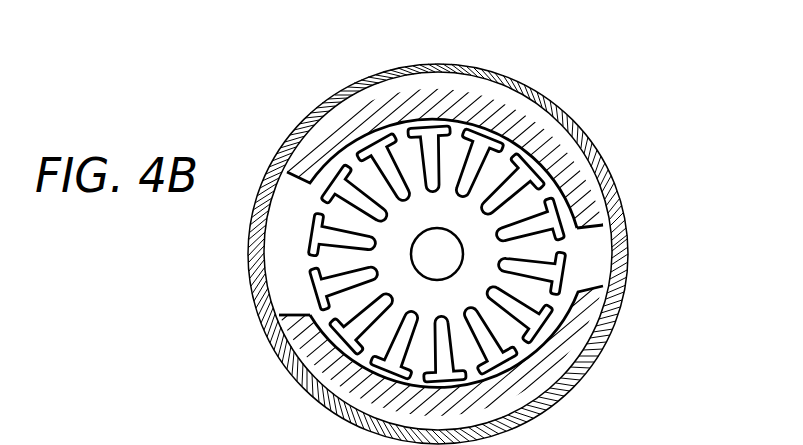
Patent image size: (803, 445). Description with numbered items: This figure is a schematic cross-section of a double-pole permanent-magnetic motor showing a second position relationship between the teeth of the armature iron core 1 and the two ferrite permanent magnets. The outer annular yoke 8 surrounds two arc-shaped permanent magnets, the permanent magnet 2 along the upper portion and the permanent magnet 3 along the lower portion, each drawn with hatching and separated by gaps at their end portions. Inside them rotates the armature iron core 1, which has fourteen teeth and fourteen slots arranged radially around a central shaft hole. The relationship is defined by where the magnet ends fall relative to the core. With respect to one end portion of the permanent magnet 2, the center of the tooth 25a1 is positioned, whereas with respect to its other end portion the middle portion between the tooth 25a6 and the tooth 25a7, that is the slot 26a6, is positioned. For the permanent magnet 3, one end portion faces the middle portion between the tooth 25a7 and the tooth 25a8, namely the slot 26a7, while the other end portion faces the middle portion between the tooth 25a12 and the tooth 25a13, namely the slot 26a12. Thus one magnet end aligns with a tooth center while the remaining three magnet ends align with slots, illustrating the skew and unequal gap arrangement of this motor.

The armature iron core 1 is at (530, 265).
The permanent magnet 2 is at (548, 93).
The permanent magnet 3 is at (556, 372).
The yoke 8 is at (578, 116).
The tooth 25a1 is at (337, 187).
The tooth 25a6 is at (548, 222).
The tooth 25a7 is at (553, 271).
The tooth 25a8 is at (535, 323).
The tooth 25a12 is at (345, 338).
The tooth 25a13 is at (322, 290).
The slot 26a6 is at (568, 236).
The slot 26a7 is at (540, 296).
The slot 26a12 is at (333, 318).